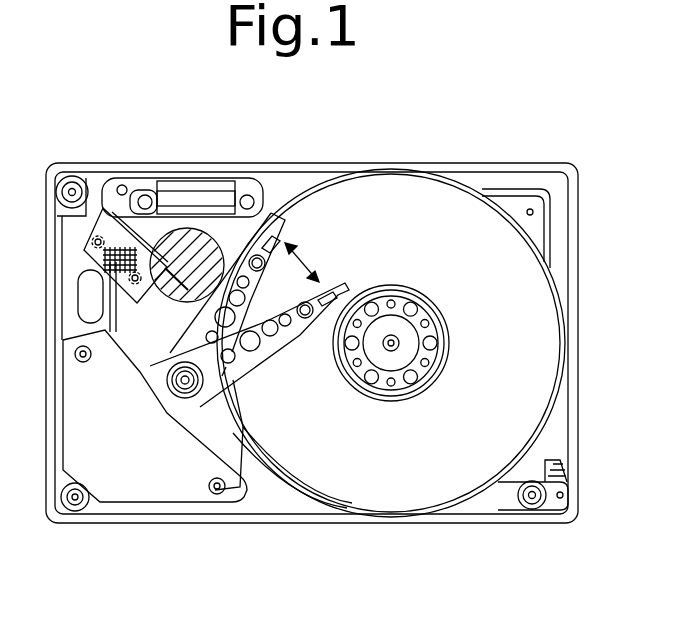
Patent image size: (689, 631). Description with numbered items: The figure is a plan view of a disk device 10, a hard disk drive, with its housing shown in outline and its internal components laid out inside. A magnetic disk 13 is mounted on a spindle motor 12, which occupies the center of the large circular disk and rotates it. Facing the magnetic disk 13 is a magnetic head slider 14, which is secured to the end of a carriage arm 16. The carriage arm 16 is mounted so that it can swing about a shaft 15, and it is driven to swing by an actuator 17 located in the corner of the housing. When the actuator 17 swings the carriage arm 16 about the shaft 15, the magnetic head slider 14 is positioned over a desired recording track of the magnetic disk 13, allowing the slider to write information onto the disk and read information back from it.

The disk device 10 is at (295, 148).
The spindle motor 12 is at (442, 163).
The magnetic disk 13 is at (482, 280).
The magnetic head slider 14 is at (337, 272).
The shaft 15 is at (178, 372).
The carriage arm 16 is at (267, 355).
The actuator 17 is at (136, 455).